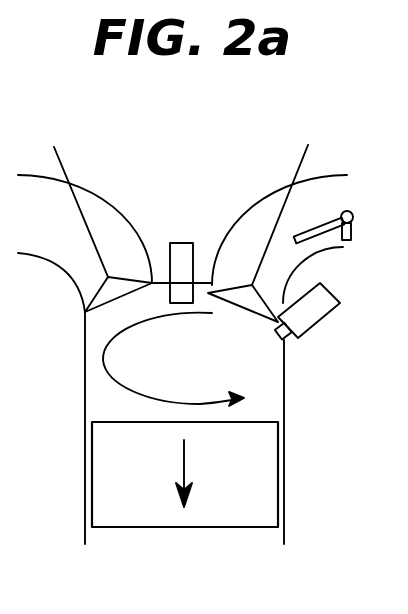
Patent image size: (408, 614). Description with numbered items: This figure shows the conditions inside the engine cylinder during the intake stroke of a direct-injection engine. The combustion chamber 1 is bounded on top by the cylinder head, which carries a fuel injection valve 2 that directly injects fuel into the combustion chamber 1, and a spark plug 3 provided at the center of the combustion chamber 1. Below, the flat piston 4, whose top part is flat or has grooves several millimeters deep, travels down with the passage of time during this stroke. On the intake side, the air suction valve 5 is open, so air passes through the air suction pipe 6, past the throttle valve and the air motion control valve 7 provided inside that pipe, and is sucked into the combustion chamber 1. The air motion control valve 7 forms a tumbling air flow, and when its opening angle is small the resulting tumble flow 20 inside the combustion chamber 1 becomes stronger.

The combustion chamber 1 is at (253, 375).
The fuel injection valve 2 is at (315, 322).
The spark plug 3 is at (180, 248).
The flat piston 4 is at (110, 473).
The air suction valve 5 is at (243, 308).
The air suction pipe 6 is at (247, 232).
The air motion control valve 7 is at (347, 211).
The tumble flow 20 is at (100, 372).